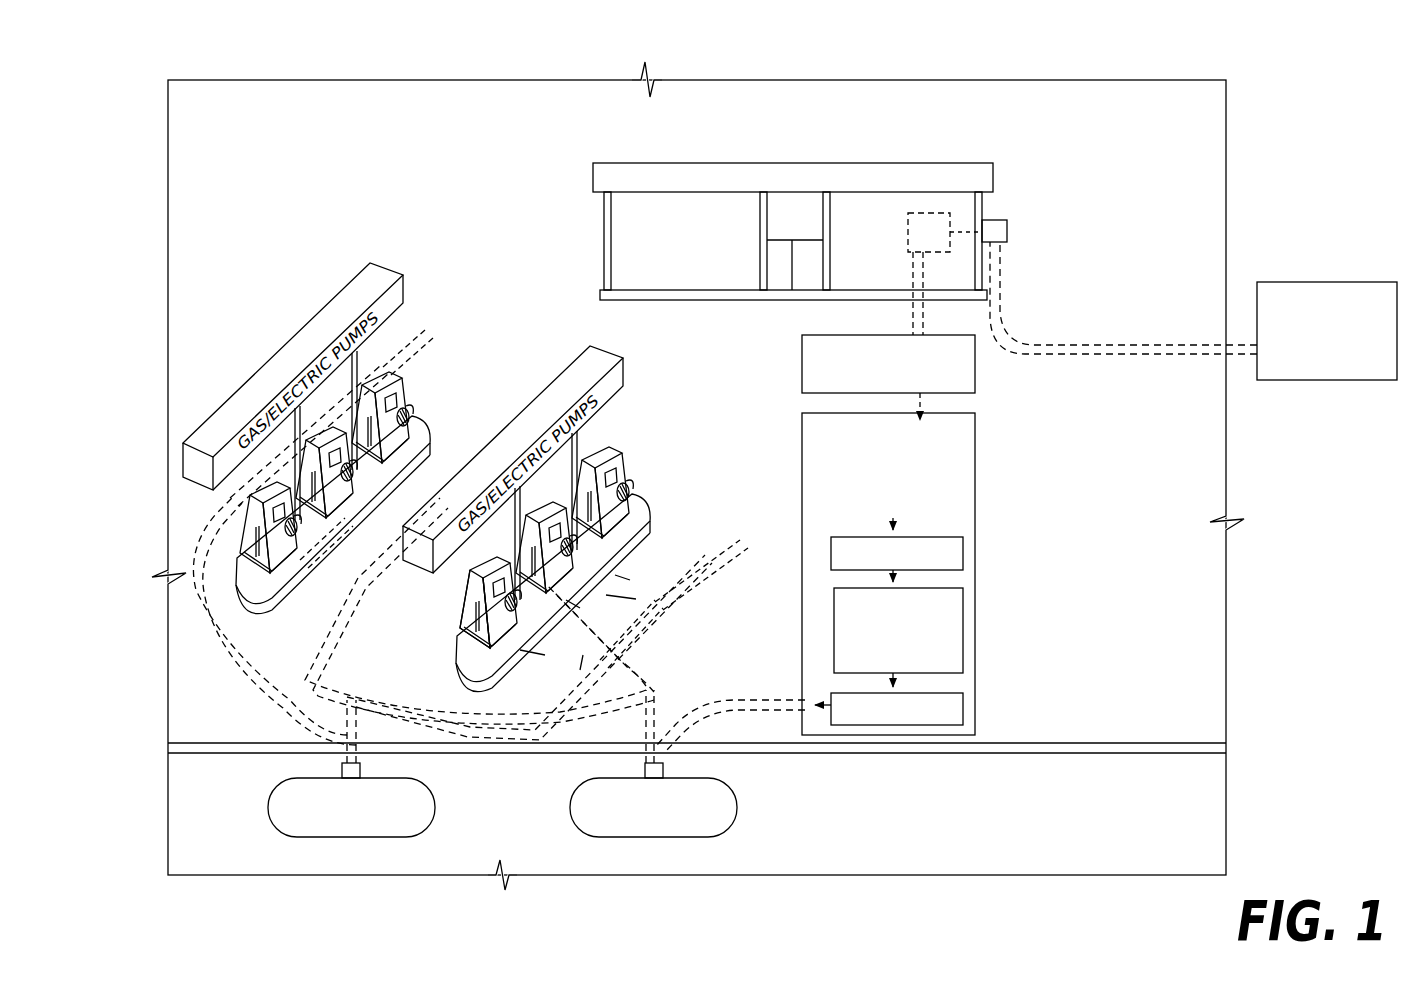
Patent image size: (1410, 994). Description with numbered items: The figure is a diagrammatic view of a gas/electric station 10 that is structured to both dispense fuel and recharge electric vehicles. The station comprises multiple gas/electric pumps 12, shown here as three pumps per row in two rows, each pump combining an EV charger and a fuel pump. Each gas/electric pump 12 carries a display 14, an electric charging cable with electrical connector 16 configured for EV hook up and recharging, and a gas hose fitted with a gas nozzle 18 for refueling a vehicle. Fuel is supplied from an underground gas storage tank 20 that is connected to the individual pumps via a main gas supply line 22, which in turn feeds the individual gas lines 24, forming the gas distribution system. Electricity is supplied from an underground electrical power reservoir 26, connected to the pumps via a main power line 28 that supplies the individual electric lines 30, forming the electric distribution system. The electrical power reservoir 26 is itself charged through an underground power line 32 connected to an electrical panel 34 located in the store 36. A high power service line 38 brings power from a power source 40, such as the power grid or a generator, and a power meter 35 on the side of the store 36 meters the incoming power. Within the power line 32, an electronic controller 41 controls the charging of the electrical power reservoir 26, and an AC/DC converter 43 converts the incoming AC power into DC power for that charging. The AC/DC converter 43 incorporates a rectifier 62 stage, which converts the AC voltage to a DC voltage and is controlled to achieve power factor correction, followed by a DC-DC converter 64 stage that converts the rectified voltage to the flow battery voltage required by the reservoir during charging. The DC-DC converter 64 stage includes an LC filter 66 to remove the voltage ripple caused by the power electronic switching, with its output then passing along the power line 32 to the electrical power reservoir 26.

The gas/electric station 10 is at (204, 80).
The gas/electric pumps 12 is at (615, 470).
The display 14 is at (612, 478).
The electric charging cable with electrical connector 16 is at (640, 540).
The gas hose with gas nozzle 18 is at (630, 503).
The underground gas storage tank 20 is at (376, 838).
The main gas supply line 22 is at (235, 675).
The individual gas lines 24 is at (250, 525).
The electrical power reservoir 26 is at (668, 838).
The main power line 28 is at (318, 690).
The individual electric lines 30 is at (430, 468).
The underground power line 32 is at (910, 322).
The electrical panel 34 is at (928, 213).
The power meter 35 is at (1008, 230).
The store 36 is at (602, 232).
The high power service line 38 is at (1097, 355).
The power source 40 is at (1346, 282).
The electronic controller 41 is at (975, 380).
The AC/DC converter 43 is at (975, 470).
The rectifier 62 is at (963, 548).
The DC-DC converter 64 is at (963, 620).
The LC filter 66 is at (963, 703).